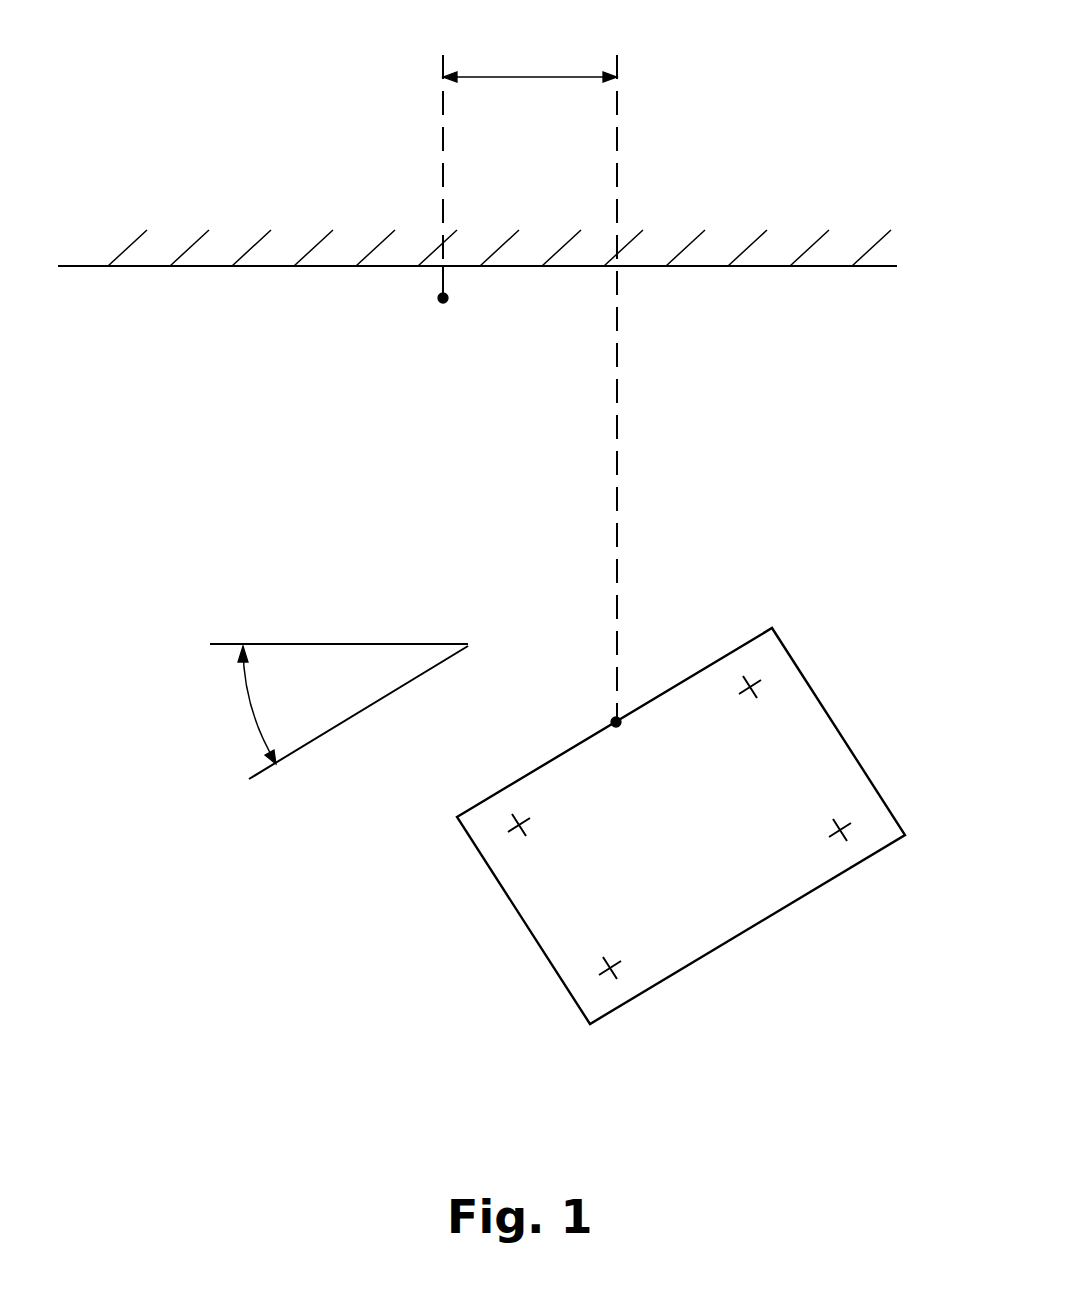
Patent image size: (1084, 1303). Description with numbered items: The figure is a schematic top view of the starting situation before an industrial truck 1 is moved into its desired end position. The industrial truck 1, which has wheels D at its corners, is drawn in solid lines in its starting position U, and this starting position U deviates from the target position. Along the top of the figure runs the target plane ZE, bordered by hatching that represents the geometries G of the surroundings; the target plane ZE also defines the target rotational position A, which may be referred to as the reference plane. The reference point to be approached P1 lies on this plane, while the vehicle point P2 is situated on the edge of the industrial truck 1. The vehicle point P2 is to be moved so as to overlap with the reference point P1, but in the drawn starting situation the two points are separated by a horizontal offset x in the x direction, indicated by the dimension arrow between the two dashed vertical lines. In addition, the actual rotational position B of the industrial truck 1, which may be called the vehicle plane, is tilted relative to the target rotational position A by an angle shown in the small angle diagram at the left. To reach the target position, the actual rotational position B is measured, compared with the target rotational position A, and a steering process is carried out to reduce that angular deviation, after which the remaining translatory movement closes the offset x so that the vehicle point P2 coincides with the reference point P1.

The industrial truck 1 is at (681, 821).
The actual rotational position B is at (780, 967).
The wheel D is at (766, 688).
The starting position U is at (445, 964).
The geometries G is at (187, 268).
The target rotational position A is at (916, 278).
The target plane ZE is at (862, 268).
The reference point to be approached P1 is at (468, 291).
The vehicle point P2 is at (640, 737).
The horizontal offset between P1 and P2 in the x direction x is at (523, 76).